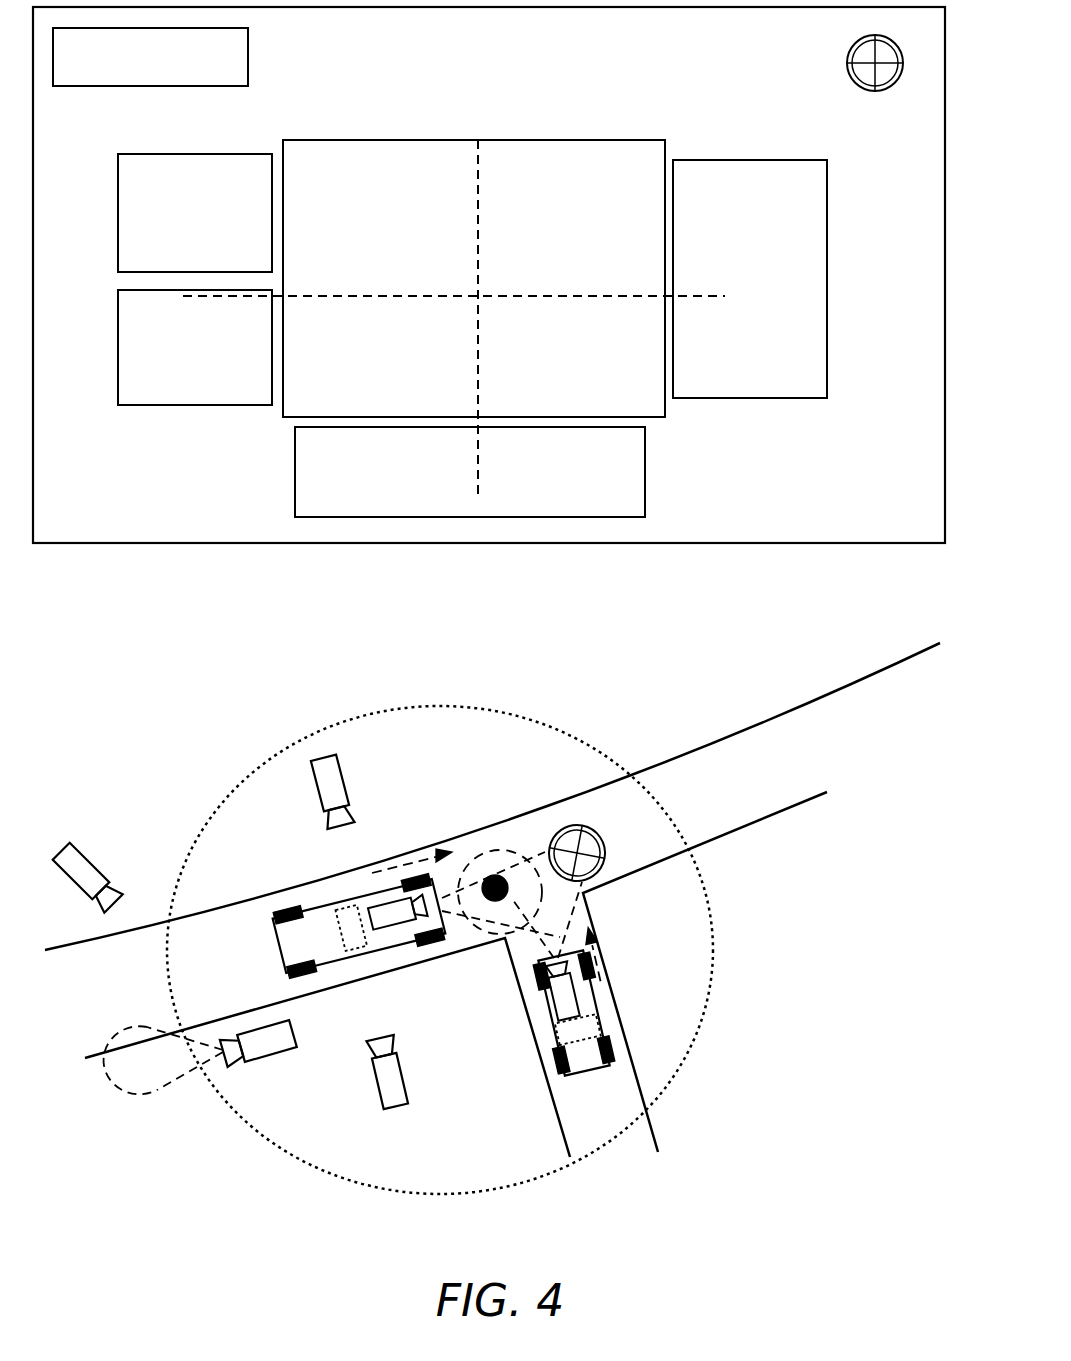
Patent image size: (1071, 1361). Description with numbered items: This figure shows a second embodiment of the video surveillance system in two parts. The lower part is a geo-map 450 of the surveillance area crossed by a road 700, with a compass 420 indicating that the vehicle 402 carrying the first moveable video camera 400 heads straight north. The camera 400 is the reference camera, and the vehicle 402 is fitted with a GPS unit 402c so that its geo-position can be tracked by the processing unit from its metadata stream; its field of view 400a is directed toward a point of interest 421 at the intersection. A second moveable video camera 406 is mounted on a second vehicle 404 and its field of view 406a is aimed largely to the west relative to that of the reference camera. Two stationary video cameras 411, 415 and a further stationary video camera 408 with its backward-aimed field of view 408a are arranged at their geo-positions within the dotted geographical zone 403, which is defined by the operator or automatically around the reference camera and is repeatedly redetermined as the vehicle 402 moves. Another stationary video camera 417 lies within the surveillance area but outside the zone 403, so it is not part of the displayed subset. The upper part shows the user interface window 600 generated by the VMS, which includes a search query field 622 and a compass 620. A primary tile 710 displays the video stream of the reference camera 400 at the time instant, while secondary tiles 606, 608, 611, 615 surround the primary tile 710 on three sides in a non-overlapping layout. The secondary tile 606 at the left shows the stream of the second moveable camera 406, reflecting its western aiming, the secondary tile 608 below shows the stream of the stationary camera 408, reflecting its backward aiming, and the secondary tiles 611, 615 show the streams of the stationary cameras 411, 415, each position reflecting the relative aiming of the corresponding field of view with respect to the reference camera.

The user interface window 600 is at (168, 543).
The search query field 622 is at (145, 87).
The secondary tile 606 is at (113, 217).
The secondary tile 611 is at (193, 406).
The secondary tile 615 is at (766, 399).
The secondary tile 608 is at (406, 518).
The primary tile 710 is at (454, 319).
The compass 620 is at (847, 63).
The geographical zone 403 is at (257, 1138).
The road 700 is at (795, 749).
The geo-map 450 is at (778, 1143).
The stationary video camera 417 is at (82, 850).
The stationary video camera 415 is at (315, 790).
The stationary video camera 408 is at (293, 1047).
The field of view 408a is at (160, 1090).
The stationary video camera 411 is at (400, 1100).
The vehicle 402 is at (318, 914).
The moveable video camera 400 is at (398, 912).
The GPS unit 402c is at (351, 928).
The field of view 400a is at (472, 930).
The point of interest 421 is at (498, 876).
The compass 420 is at (603, 866).
The vehicle 404 is at (548, 1001).
The moveable video camera 406 is at (533, 1008).
The field of view 406a is at (528, 953).